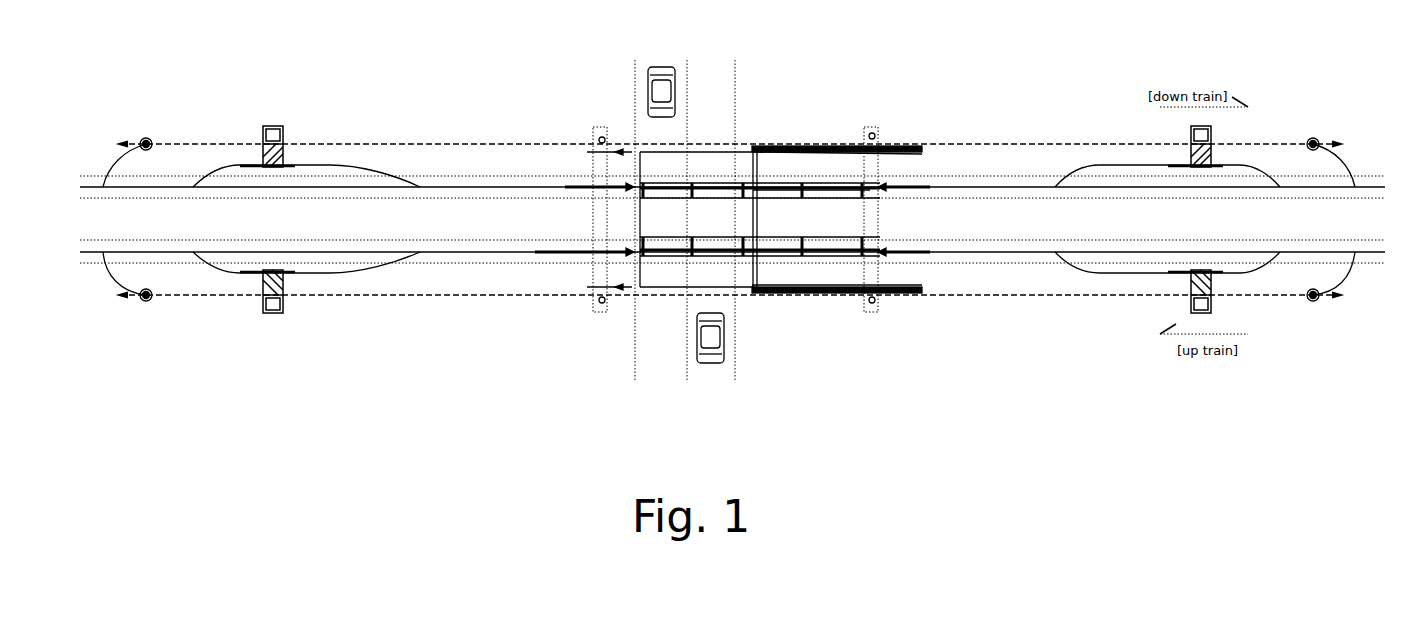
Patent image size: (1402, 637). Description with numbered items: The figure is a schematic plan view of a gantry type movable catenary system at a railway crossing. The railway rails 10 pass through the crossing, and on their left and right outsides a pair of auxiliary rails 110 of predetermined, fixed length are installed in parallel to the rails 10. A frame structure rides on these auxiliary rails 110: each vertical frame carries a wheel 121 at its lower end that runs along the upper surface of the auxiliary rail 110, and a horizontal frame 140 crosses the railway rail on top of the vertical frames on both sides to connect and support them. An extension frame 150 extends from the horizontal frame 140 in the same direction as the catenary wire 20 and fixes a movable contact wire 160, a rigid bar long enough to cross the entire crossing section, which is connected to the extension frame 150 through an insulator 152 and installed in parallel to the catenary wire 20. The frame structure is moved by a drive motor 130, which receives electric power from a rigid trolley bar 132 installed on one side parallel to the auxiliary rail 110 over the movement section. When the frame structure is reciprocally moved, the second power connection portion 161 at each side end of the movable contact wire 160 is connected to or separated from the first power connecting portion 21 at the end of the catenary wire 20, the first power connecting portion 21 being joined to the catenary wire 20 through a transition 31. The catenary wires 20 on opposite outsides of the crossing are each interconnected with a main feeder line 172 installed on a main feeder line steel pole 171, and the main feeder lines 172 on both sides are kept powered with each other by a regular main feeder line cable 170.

The railway rail 10 is at (458, 253).
The catenary wire 20 is at (515, 255).
The first power connecting portion 21 is at (625, 263).
The transition 31 is at (872, 132).
The auxiliary rail 110 is at (921, 146).
The wheel 121 is at (620, 150).
The drive motor 130 is at (778, 292).
The rigid trolley bar 132 is at (822, 290).
The horizontal frame 140 is at (763, 218).
The extension frame 150 is at (792, 150).
The insulator 152 is at (793, 188).
The movable contact wire 160 is at (814, 190).
The second power connection portion 161 is at (626, 246).
The main feeder line cable 170 is at (428, 143).
The main feeder line steel pole 171 is at (147, 139).
The main feeder line 172 is at (103, 185).